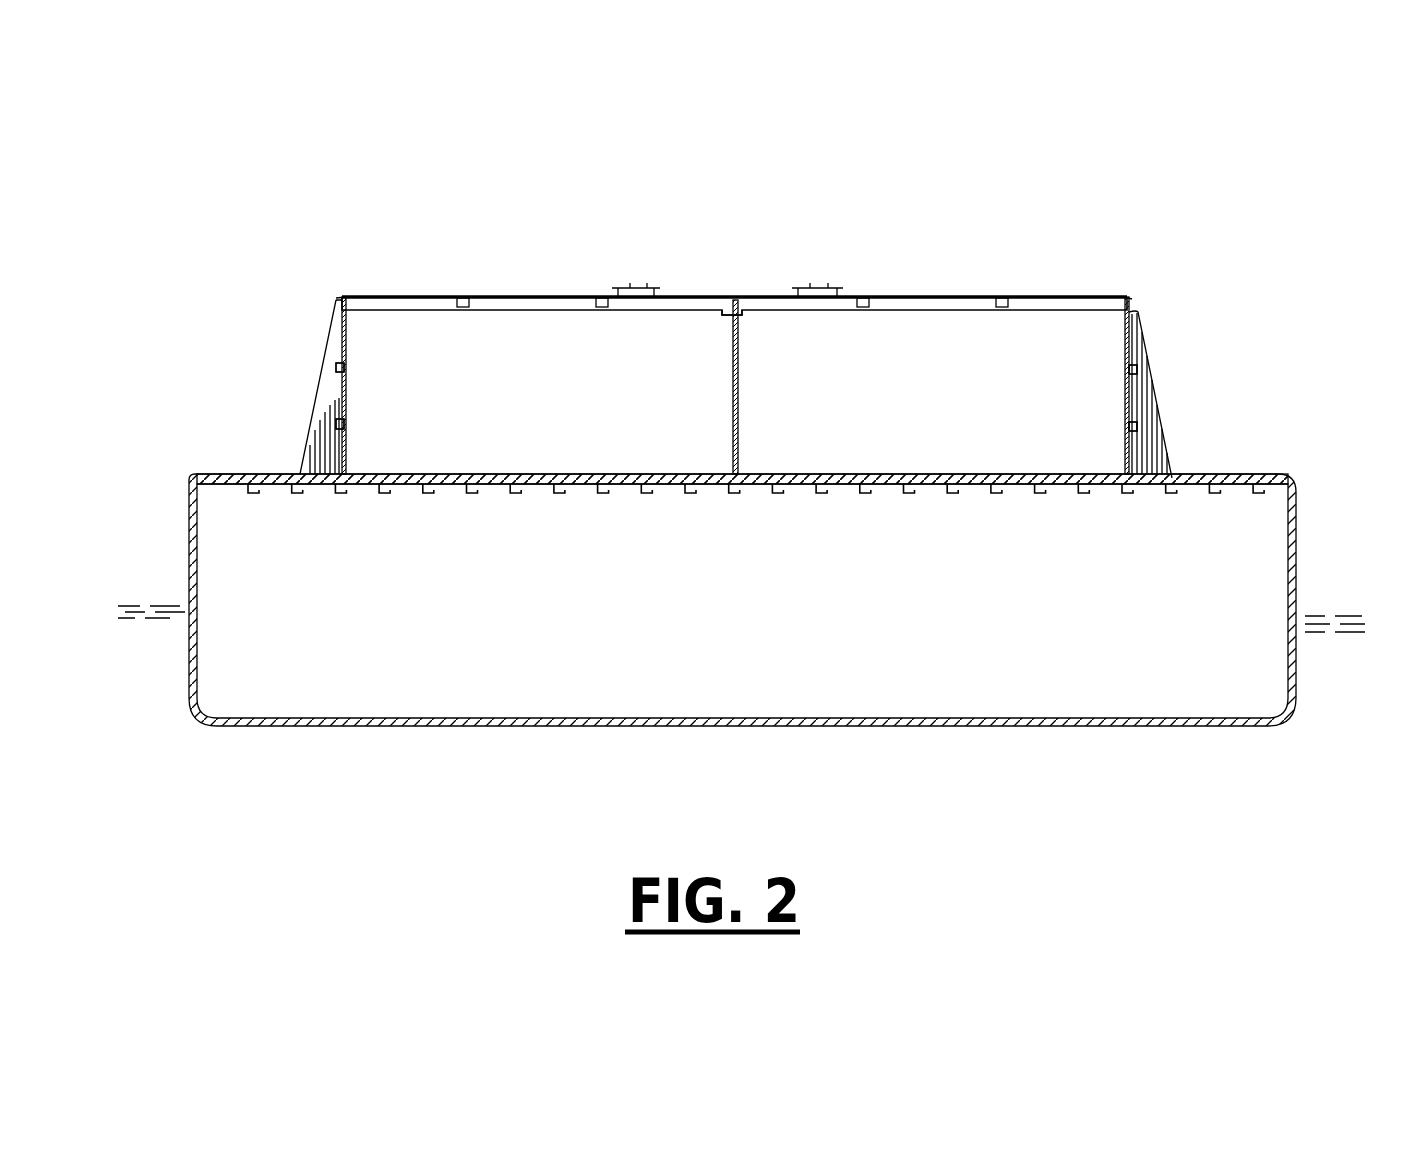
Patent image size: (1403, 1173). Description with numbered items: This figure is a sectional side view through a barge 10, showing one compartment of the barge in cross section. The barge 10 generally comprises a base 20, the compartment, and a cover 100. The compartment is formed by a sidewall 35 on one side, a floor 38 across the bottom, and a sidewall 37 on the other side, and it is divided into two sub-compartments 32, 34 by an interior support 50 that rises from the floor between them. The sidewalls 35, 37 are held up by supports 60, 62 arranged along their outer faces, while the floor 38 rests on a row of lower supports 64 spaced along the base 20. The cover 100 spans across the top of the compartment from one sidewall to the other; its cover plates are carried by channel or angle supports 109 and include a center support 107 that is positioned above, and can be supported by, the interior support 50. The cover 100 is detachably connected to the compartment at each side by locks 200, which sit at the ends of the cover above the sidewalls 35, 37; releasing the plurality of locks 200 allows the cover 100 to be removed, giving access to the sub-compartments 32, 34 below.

The barge 10 is at (1258, 154).
The base 20 is at (1217, 478).
The sub-compartment 32 is at (475, 389).
The sub-compartment 34 is at (887, 402).
The sidewall 35 is at (302, 482).
The sidewall 37 is at (1125, 400).
The floor 38 is at (790, 487).
The interior support 50 is at (740, 392).
The support 60 is at (324, 384).
The support 62 is at (337, 362).
The lower support 64 is at (524, 495).
The cover 100 is at (917, 297).
The center support 107 is at (734, 297).
The channel or angle supports 109 is at (463, 298).
The lock 200 is at (342, 297).